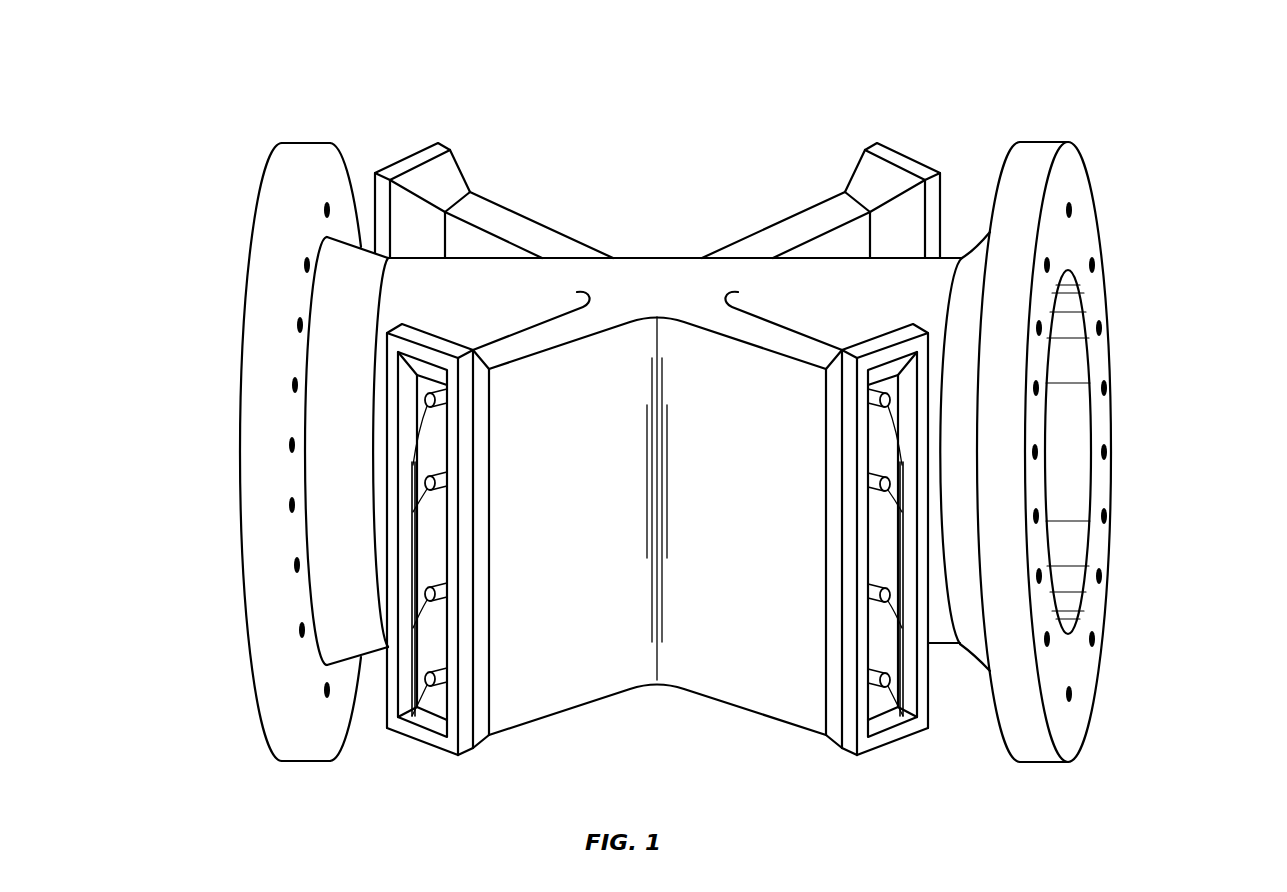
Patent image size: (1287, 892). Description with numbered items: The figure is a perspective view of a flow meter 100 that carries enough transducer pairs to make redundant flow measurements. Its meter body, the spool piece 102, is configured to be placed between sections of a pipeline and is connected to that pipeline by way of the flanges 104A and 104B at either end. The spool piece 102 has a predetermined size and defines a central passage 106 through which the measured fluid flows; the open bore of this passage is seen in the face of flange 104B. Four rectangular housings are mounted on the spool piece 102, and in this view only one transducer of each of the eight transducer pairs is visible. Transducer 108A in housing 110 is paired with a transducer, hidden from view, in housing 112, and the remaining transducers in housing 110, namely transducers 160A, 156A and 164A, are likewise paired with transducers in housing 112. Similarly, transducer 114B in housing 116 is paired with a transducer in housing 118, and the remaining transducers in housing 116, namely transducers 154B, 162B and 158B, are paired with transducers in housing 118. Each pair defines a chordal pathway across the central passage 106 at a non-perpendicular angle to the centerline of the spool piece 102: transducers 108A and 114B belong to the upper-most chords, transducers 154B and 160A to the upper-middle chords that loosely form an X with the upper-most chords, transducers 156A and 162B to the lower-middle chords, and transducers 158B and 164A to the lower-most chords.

The flow meter 100 is at (1188, 88).
The spool piece 102 is at (652, 287).
The flange 104A is at (292, 141).
The flange 104B is at (1063, 143).
The central passage 106 is at (1072, 473).
The transducer 108A is at (436, 398).
The housing 110 is at (438, 347).
The housing 112 is at (893, 147).
The transducer 114B is at (879, 400).
The housing 116 is at (870, 347).
The housing 118 is at (438, 142).
The transducer 154B is at (879, 482).
The transducer 156A is at (436, 594).
The transducer 158B is at (879, 680).
The transducer 160A is at (436, 484).
The transducer 162B is at (879, 594).
The transducer 164A is at (437, 674).